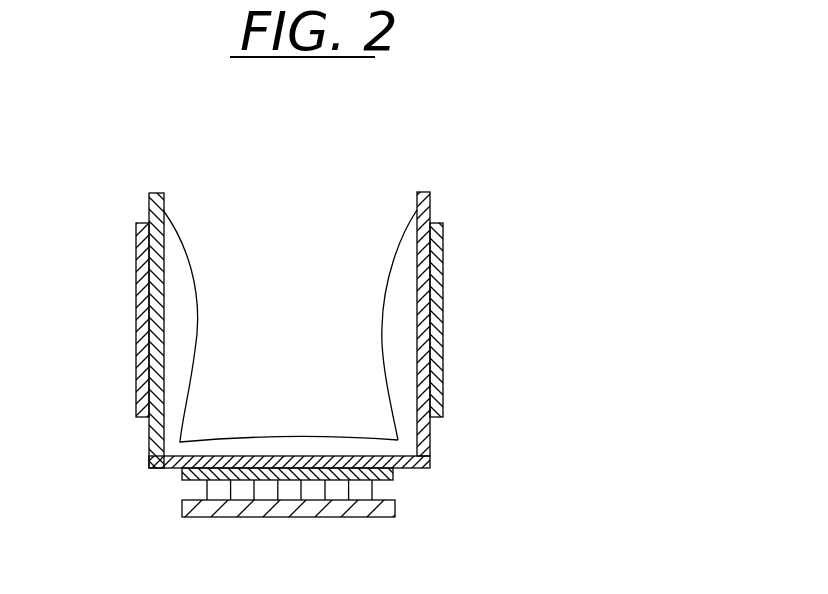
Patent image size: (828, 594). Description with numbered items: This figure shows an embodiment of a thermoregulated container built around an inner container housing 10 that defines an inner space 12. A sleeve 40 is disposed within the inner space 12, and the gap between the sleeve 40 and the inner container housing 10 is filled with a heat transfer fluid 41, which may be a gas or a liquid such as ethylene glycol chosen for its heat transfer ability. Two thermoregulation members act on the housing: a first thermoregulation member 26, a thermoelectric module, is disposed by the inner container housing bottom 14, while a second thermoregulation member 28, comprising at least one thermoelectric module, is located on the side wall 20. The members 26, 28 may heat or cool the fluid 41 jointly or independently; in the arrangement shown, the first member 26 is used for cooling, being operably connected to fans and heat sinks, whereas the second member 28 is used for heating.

The inner container housing 10 is at (421, 191).
The inner space 12 is at (225, 223).
The inner container housing bottom 14 is at (155, 468).
The side wall 20 is at (428, 213).
The first thermoregulation member 26 is at (397, 472).
The second thermoregulation member 28 is at (136, 275).
The sleeve 40 is at (193, 350).
The heat transfer fluid 41 is at (403, 425).